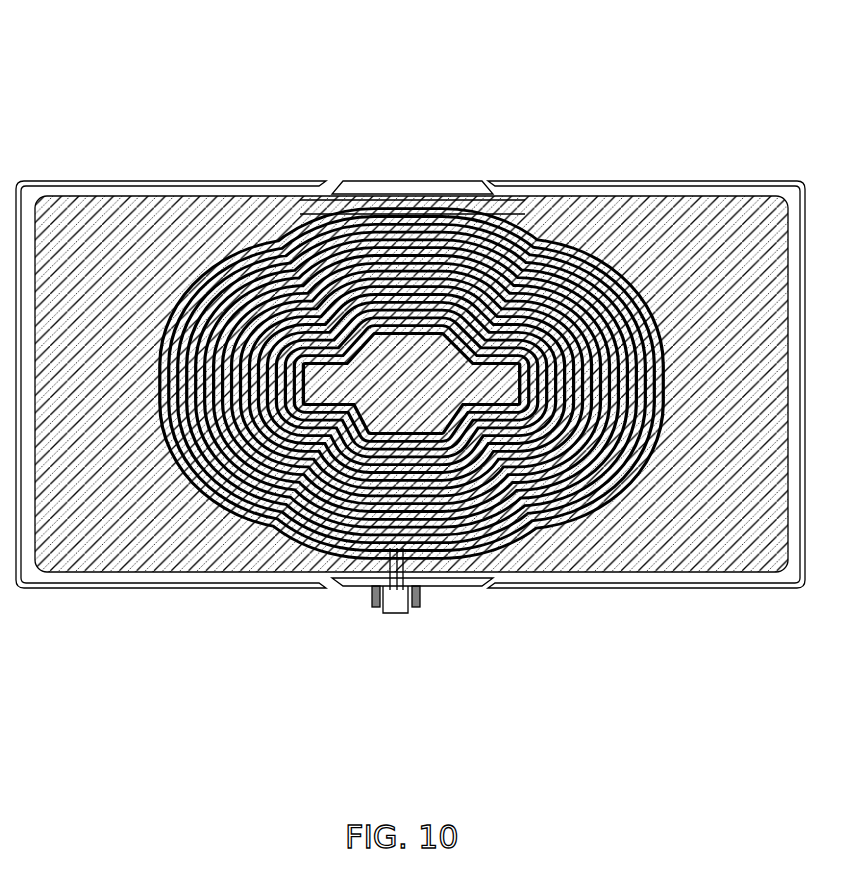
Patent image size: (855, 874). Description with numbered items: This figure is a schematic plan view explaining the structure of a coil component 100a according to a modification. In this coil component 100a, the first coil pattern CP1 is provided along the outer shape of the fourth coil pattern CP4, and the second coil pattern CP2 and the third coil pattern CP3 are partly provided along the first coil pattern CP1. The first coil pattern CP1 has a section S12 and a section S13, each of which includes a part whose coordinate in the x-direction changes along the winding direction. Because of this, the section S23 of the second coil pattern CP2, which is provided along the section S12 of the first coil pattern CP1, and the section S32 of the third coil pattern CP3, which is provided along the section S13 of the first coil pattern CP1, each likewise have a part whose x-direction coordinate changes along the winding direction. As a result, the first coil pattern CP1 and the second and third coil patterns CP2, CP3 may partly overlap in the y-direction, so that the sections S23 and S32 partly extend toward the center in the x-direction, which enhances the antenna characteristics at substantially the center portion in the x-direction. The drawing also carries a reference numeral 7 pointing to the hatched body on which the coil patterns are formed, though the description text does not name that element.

The coil component 100a is at (752, 50).
The first coil pattern CP1 is at (420, 181).
The second coil pattern CP2 is at (727, 181).
The third coil pattern CP3 is at (96, 181).
The fourth coil pattern CP4 is at (398, 208).
The section S12 is at (499, 385).
The section S13 is at (325, 385).
The section S23 is at (499, 385).
The section S32 is at (325, 385).
The substrate 7 is at (683, 560).